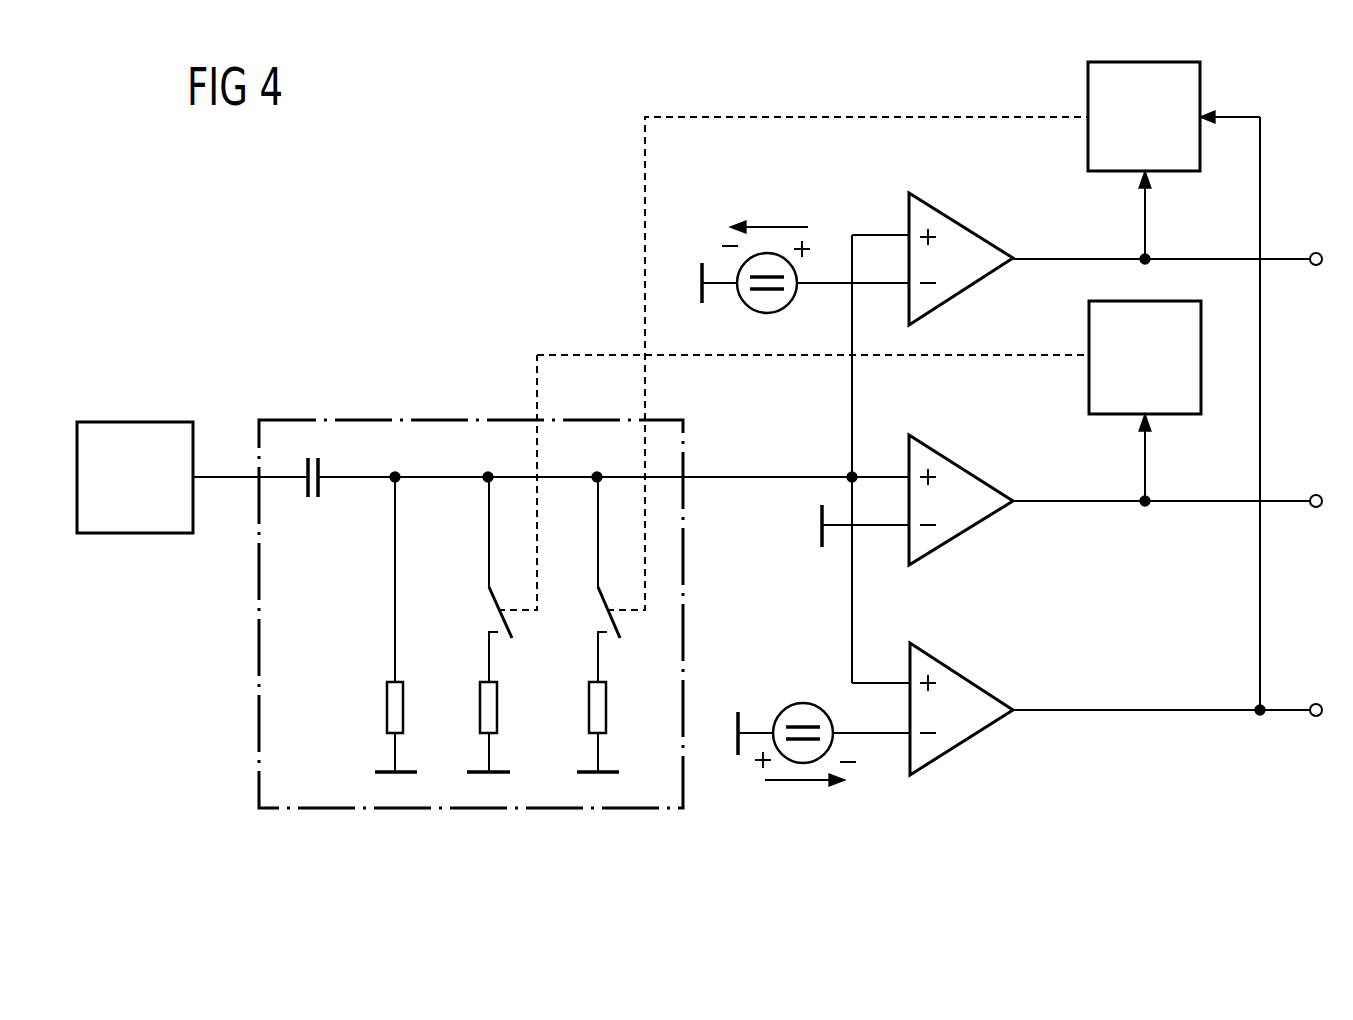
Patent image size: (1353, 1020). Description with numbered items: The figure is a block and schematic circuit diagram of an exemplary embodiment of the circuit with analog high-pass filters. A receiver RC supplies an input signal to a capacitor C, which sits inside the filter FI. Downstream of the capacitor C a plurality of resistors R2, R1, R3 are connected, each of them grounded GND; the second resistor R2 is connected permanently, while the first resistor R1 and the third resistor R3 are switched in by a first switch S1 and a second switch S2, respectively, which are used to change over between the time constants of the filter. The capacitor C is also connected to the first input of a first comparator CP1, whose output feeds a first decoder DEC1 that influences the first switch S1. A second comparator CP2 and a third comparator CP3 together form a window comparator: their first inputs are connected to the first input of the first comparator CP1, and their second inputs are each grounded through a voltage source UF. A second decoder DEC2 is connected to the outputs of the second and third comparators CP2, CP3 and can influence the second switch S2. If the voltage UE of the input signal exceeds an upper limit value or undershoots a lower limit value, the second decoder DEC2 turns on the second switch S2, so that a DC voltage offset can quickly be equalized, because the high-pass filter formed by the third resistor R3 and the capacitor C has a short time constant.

The receiver RC is at (138, 422).
The filter FI is at (357, 419).
The capacitor C is at (320, 486).
The first resistor R1 is at (497, 708).
The second resistor R2 is at (387, 708).
The third resistor R3 is at (606, 708).
The first switch S1 is at (497, 610).
The second switch S2 is at (605, 610).
The ground GND is at (375, 772).
The voltage of the input signal UE is at (774, 477).
The voltage source UF is at (806, 501).
The first comparator CP1 is at (965, 470).
The second comparator CP2 is at (965, 228).
The third comparator CP3 is at (963, 677).
The first decoder DEC1 is at (869, 401).
The second decoder DEC2 is at (1174, 160).